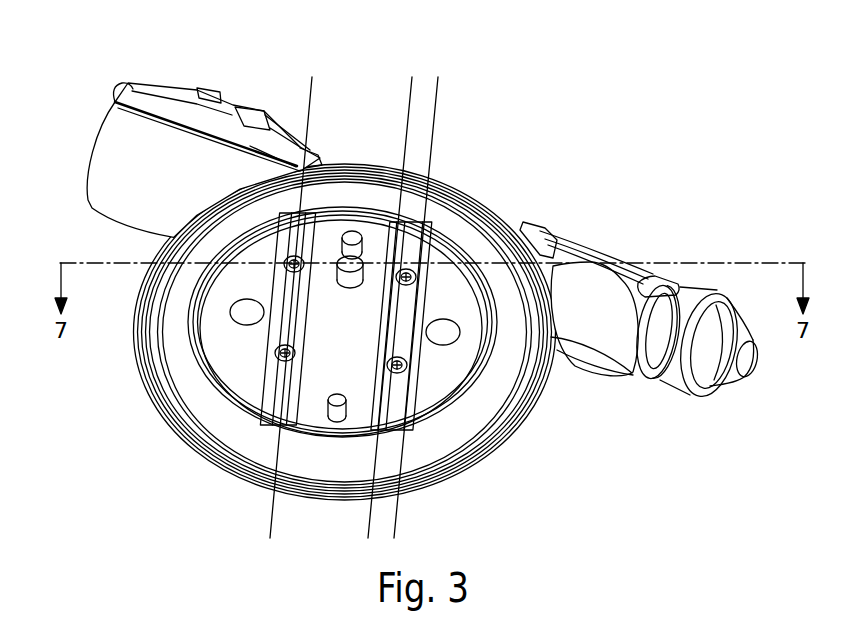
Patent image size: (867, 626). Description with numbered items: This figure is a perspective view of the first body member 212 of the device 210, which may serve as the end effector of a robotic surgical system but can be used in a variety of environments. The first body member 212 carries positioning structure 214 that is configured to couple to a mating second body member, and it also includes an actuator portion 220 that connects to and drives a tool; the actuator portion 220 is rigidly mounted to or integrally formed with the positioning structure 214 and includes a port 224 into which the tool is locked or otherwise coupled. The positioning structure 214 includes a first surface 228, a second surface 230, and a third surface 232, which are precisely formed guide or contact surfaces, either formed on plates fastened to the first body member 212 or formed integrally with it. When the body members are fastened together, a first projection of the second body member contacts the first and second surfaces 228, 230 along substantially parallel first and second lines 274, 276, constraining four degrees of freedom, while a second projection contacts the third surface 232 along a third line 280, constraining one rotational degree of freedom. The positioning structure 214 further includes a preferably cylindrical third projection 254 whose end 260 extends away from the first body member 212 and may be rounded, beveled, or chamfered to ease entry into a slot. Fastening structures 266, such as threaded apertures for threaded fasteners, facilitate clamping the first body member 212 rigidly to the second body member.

The device 210 is at (650, 453).
The first body member 212 is at (483, 243).
The positioning structure 214 is at (114, 416).
The actuator portion 220 is at (132, 151).
The port 224 is at (747, 360).
The first surface 228 is at (443, 255).
The second surface 230 is at (392, 232).
The third surface 232 is at (287, 245).
The third projection 254 is at (480, 277).
The end 260 is at (347, 280).
The fastening structures 266 is at (340, 403).
The first line 274 is at (437, 98).
The second line 276 is at (410, 100).
The third line 280 is at (311, 88).